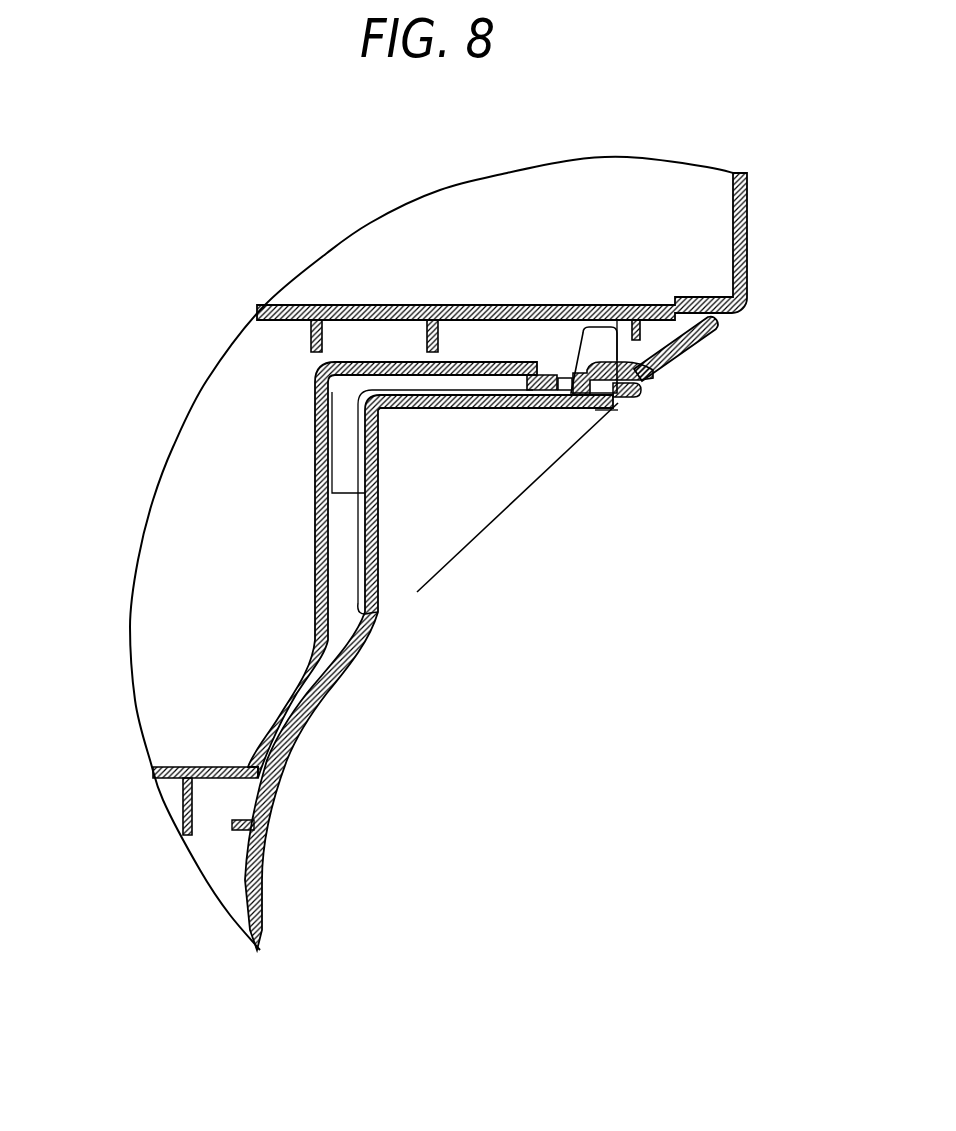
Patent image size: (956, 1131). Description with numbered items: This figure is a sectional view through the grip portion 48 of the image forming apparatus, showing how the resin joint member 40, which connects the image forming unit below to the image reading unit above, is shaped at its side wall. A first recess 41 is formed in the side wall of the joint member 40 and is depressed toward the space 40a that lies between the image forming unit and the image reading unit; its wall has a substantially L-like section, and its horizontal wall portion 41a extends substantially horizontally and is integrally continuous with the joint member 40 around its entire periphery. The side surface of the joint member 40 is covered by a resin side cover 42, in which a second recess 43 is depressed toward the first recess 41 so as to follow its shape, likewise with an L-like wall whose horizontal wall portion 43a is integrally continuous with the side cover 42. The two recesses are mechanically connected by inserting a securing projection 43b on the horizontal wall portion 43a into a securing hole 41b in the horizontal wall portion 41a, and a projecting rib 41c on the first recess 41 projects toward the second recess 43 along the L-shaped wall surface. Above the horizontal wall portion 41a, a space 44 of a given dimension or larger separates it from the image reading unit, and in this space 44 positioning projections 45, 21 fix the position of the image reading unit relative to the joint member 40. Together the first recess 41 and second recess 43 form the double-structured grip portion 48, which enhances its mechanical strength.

The positioning projection 21 is at (622, 340).
The joint member 40 is at (704, 346).
The space 40a is at (188, 517).
The first recess 41 is at (332, 493).
The horizontal wall portion 41a is at (487, 413).
The securing hole 41b is at (660, 373).
The projecting rib 41c is at (368, 592).
The side cover 42 is at (643, 392).
The second recess 43 is at (417, 475).
The horizontal wall portion 43a is at (453, 413).
The securing projection 43b is at (610, 408).
The space 44 is at (465, 348).
The positioning projection 45 is at (597, 337).
The grip portion 48 is at (416, 590).